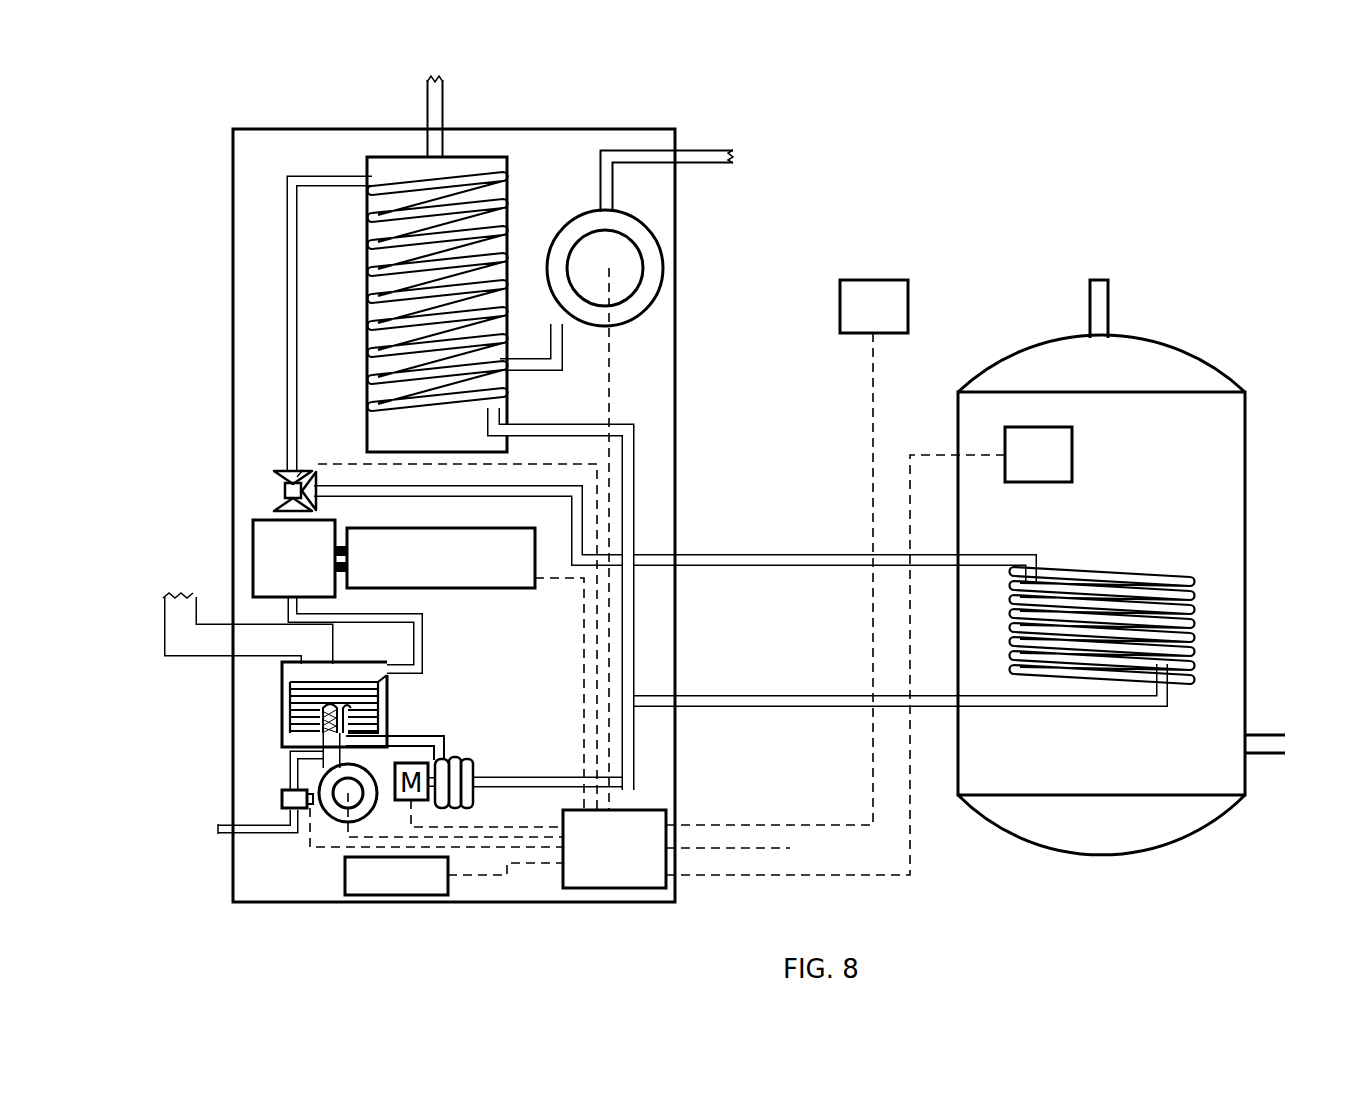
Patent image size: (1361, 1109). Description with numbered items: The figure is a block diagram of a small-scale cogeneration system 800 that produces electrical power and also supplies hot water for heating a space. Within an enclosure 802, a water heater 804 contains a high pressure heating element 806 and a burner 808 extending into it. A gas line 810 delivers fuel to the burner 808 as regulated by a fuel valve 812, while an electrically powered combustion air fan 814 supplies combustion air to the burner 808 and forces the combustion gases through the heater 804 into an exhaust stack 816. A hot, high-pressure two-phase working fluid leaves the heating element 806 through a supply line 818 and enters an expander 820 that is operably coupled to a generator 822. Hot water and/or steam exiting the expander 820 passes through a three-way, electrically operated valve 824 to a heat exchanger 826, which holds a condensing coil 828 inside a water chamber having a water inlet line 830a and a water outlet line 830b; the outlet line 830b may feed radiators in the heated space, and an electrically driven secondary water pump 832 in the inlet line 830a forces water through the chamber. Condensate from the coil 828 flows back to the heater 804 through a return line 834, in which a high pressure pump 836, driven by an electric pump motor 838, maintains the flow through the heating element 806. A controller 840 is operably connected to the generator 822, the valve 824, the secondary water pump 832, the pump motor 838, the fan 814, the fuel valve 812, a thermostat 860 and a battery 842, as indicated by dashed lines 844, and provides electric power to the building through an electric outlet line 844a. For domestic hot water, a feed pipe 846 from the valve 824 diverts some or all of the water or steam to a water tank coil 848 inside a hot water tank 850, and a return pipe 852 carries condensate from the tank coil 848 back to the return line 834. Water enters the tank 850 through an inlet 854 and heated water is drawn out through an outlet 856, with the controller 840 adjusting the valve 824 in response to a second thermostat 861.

The small-scale cogeneration system 800 is at (870, 128).
The housing 802 is at (676, 384).
The water heater 804 is at (292, 742).
The high pressure heating element 806 is at (379, 694).
The burner 808 is at (340, 718).
The gas line 810 is at (226, 824).
The fuel valve 812 is at (281, 797).
The combustion air fan 814 is at (352, 822).
The exhaust stack 816 is at (208, 657).
The supply line 818 is at (424, 637).
The expander 820 is at (253, 545).
The generator 822 is at (428, 590).
The three-way electrically operated valve 824 is at (281, 493).
The heat exchanger 826 is at (366, 162).
The condensing coil 828 is at (506, 178).
The water inlet line 830a is at (690, 150).
The water outlet line 830b is at (444, 92).
The secondary water pump 832 is at (660, 250).
The return line 834 is at (635, 492).
The high pressure pump 836 is at (474, 766).
The pump motor 838 is at (441, 752).
The controller 840 is at (668, 815).
The battery 842 is at (345, 891).
The dashed lines 844 is at (612, 797).
The electric outlet line 844a is at (792, 848).
The feed pipe 846 is at (773, 556).
The water tank coil 848 is at (1084, 578).
The hot water tank 850 is at (1247, 474).
The return pipe 852 is at (760, 707).
The inlet 854 is at (1266, 734).
The outlet 856 is at (1108, 302).
The thermostat 860 is at (909, 305).
The thermostat 861 is at (1073, 453).